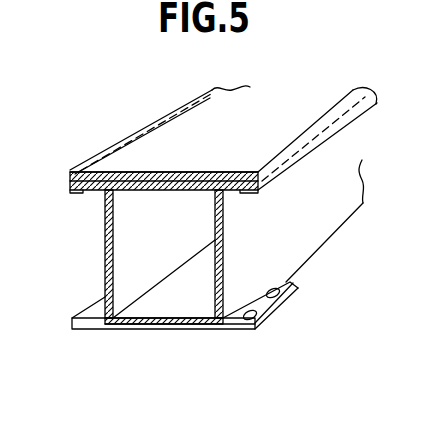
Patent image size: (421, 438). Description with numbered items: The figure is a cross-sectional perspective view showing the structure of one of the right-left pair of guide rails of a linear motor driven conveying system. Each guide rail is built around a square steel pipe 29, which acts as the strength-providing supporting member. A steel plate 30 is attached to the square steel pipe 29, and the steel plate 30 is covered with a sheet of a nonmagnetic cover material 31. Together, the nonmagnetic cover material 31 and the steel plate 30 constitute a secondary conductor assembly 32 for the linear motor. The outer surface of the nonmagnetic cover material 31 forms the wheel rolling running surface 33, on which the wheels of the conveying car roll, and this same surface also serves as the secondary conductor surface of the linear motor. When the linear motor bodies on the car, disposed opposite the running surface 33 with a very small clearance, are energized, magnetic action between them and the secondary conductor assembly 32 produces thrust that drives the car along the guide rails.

The square steel pipe 29 is at (106, 276).
The steel plate 30 is at (218, 172).
The nonmagnetic cover material 31 is at (143, 172).
The secondary conductor assembly 32 is at (146, 190).
The wheel rolling running surface 33 is at (178, 127).